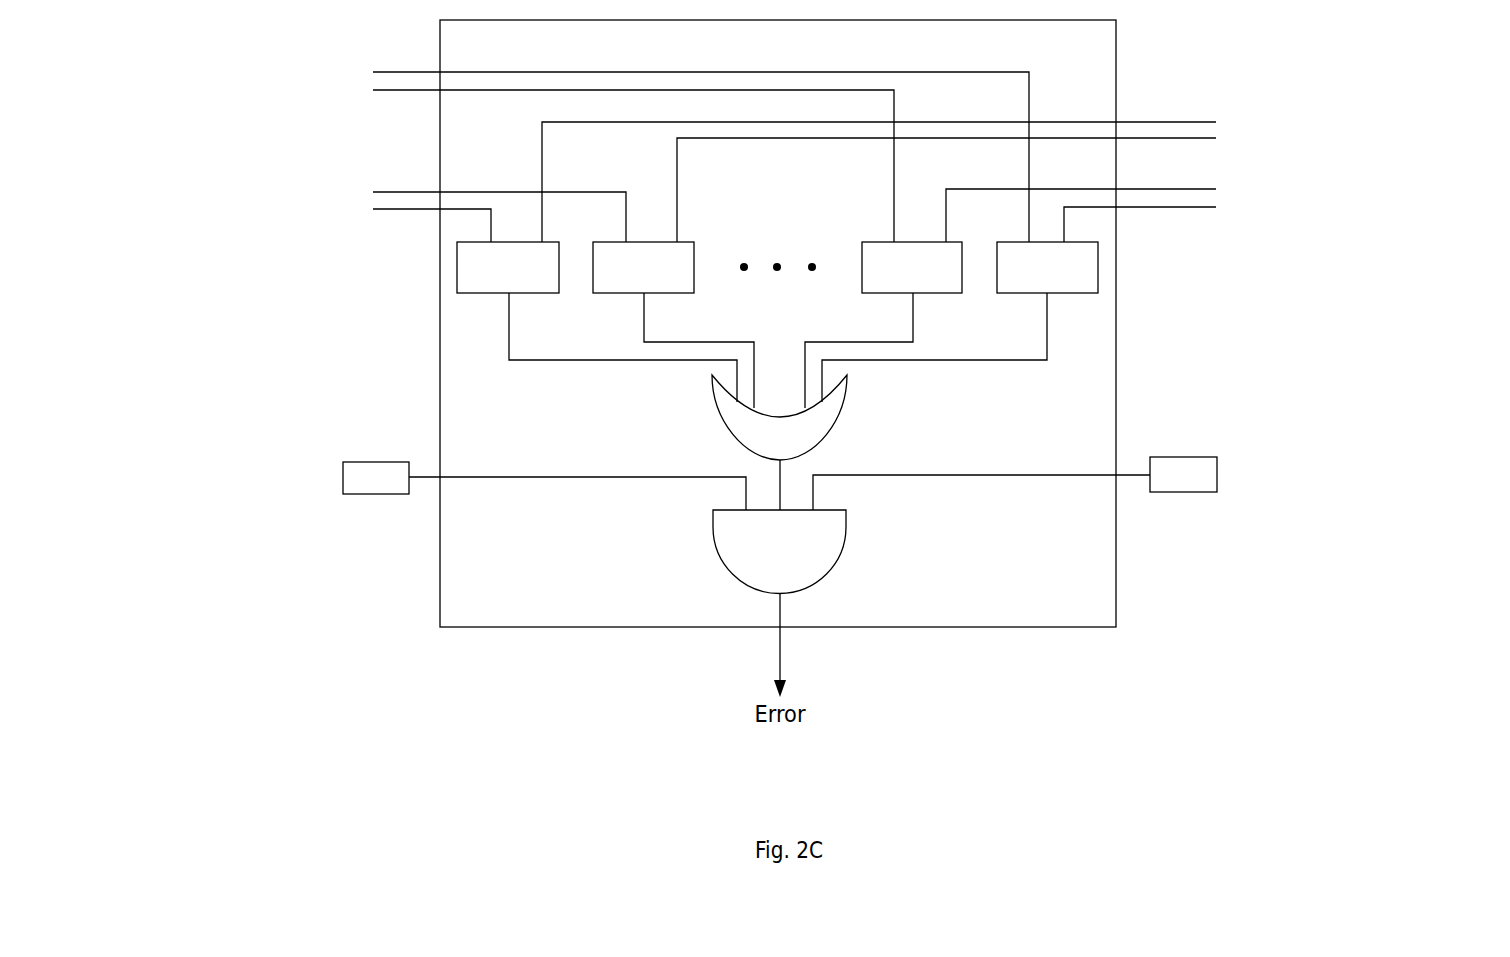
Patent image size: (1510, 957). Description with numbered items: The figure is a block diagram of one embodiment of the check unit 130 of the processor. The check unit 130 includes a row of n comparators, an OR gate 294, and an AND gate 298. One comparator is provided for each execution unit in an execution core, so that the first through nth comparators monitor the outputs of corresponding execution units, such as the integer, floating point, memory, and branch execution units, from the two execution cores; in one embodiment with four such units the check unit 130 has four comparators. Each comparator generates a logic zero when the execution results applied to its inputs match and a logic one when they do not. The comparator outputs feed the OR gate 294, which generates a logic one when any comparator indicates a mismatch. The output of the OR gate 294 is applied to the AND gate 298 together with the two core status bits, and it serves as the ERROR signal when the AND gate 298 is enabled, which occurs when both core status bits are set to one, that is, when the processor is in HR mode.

The check unit 130 is at (778, 323).
The OR gate 294 is at (779, 442).
The AND gate 298 is at (779, 603).